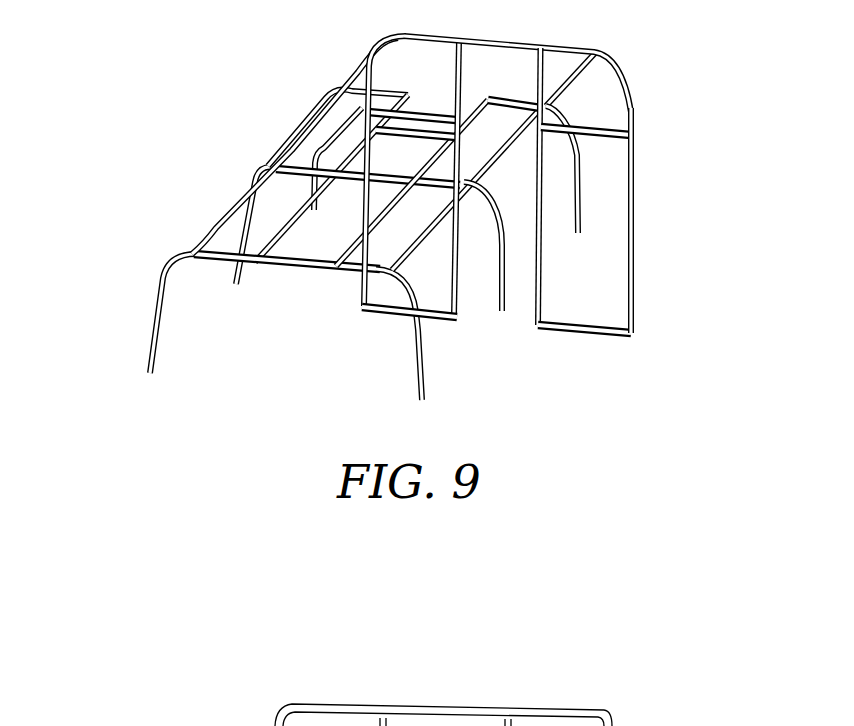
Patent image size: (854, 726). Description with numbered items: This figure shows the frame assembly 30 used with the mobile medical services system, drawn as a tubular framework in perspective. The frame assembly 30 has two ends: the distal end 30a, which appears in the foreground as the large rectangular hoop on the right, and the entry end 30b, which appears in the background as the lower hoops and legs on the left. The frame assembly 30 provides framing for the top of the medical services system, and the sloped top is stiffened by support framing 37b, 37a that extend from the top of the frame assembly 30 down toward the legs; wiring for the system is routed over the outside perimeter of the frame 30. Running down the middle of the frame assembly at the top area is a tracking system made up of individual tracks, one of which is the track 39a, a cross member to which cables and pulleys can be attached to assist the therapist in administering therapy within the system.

The frame assembly 30 is at (623, 63).
The distal end 30a is at (634, 283).
The entry end 30b is at (158, 287).
The support framing 37a is at (497, 291).
The support framing 37b is at (250, 182).
The track 39a is at (348, 264).